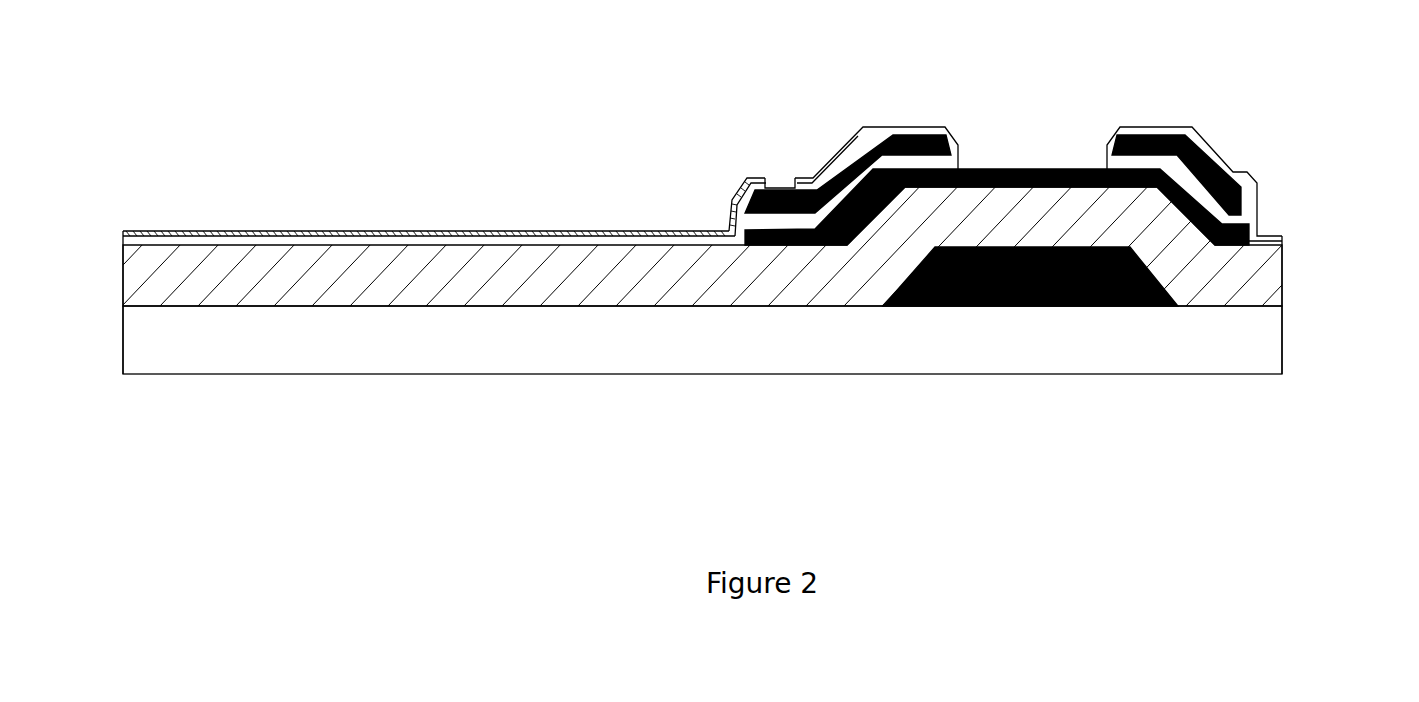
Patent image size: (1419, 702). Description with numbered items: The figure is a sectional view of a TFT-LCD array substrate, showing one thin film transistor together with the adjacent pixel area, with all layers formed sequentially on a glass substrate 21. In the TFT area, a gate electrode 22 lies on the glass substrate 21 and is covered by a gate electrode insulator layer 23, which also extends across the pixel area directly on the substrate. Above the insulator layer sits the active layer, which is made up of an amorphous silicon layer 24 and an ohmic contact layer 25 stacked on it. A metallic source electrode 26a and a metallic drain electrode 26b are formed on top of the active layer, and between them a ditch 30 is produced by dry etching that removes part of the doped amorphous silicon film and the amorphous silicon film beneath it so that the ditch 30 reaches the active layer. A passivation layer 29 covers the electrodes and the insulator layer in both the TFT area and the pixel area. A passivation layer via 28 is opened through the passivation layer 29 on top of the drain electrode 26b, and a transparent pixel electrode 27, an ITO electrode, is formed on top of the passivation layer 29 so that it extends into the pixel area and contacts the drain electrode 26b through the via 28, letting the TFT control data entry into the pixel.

The glass substrate 21 is at (800, 347).
The gate electrode 22 is at (1037, 305).
The gate electrode insulator layer 23 is at (1232, 281).
The amorphous silicon layer 24 is at (1257, 232).
The ohmic contact layer 25 is at (1250, 229).
The source electrode 26a is at (1170, 135).
The drain electrode 26b is at (901, 132).
The transparent pixel electrode 27 is at (727, 230).
The passivation layer via 28 is at (781, 172).
The passivation layer 29 is at (1217, 157).
The ditch 30 is at (1027, 138).